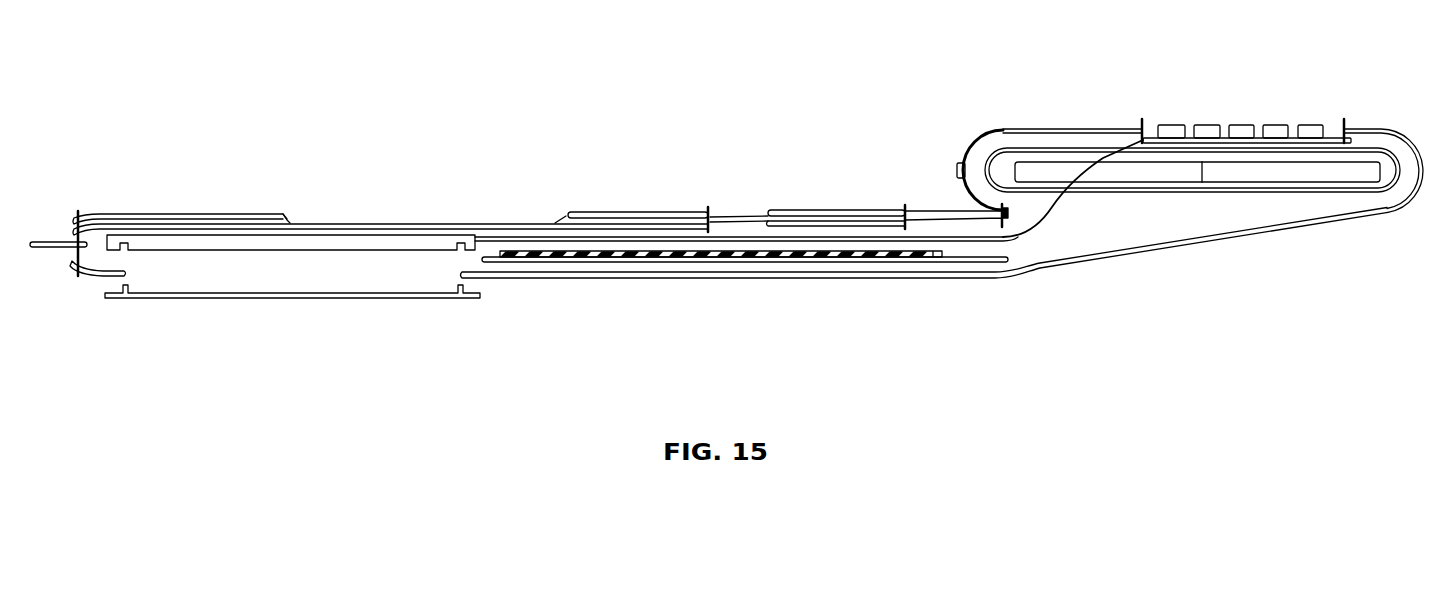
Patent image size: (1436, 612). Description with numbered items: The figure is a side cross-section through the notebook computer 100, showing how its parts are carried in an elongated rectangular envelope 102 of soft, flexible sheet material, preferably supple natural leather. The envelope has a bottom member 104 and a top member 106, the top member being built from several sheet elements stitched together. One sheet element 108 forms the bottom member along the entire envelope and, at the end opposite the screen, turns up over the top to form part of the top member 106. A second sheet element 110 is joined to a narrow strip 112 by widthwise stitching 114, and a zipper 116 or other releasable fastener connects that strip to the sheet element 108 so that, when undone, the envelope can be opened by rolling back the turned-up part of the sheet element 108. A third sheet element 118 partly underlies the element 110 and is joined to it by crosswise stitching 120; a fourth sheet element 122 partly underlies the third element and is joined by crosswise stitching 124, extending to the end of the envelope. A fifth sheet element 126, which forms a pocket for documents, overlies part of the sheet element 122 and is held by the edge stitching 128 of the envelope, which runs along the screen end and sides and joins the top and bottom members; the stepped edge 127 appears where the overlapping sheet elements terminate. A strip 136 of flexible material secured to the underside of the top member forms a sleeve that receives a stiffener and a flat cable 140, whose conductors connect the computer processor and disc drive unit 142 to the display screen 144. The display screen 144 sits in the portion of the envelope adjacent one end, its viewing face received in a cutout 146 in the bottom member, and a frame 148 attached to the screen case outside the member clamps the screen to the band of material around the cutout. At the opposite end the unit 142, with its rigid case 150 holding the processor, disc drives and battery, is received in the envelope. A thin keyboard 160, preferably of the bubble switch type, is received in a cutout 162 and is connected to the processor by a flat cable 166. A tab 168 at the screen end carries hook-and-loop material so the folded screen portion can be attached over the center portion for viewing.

The notebook computer 100 is at (605, 208).
The envelope 102 is at (364, 224).
The bottom member 104 is at (691, 262).
The top member 106 is at (808, 209).
The sheet element 108 is at (838, 279).
The second sheet element 110 is at (840, 210).
The narrow strip 112 is at (1004, 129).
The widthwise stitching 114 is at (1012, 222).
The zipper 116 is at (958, 163).
The third sheet element 118 is at (638, 212).
The crosswise stitching 120 is at (897, 206).
The fourth sheet element 122 is at (440, 223).
The crosswise stitching 124 is at (707, 208).
The fifth sheet element 126 is at (190, 213).
The flap edge step 127 is at (284, 214).
The edge stitching 128 is at (76, 211).
The strip of flexible material 136 is at (493, 263).
The flat cable 140 is at (1018, 234).
The processor and disc drive unit 142 is at (1195, 193).
The display screen 144 is at (340, 250).
The cutout 146 is at (126, 274).
The frame 148 is at (256, 299).
The rigid case 150 is at (1326, 197).
The keyboard 160 is at (1275, 124).
The cutout 162 is at (1340, 137).
The flat cable 166 is at (1187, 124).
The tab 168 is at (50, 248).